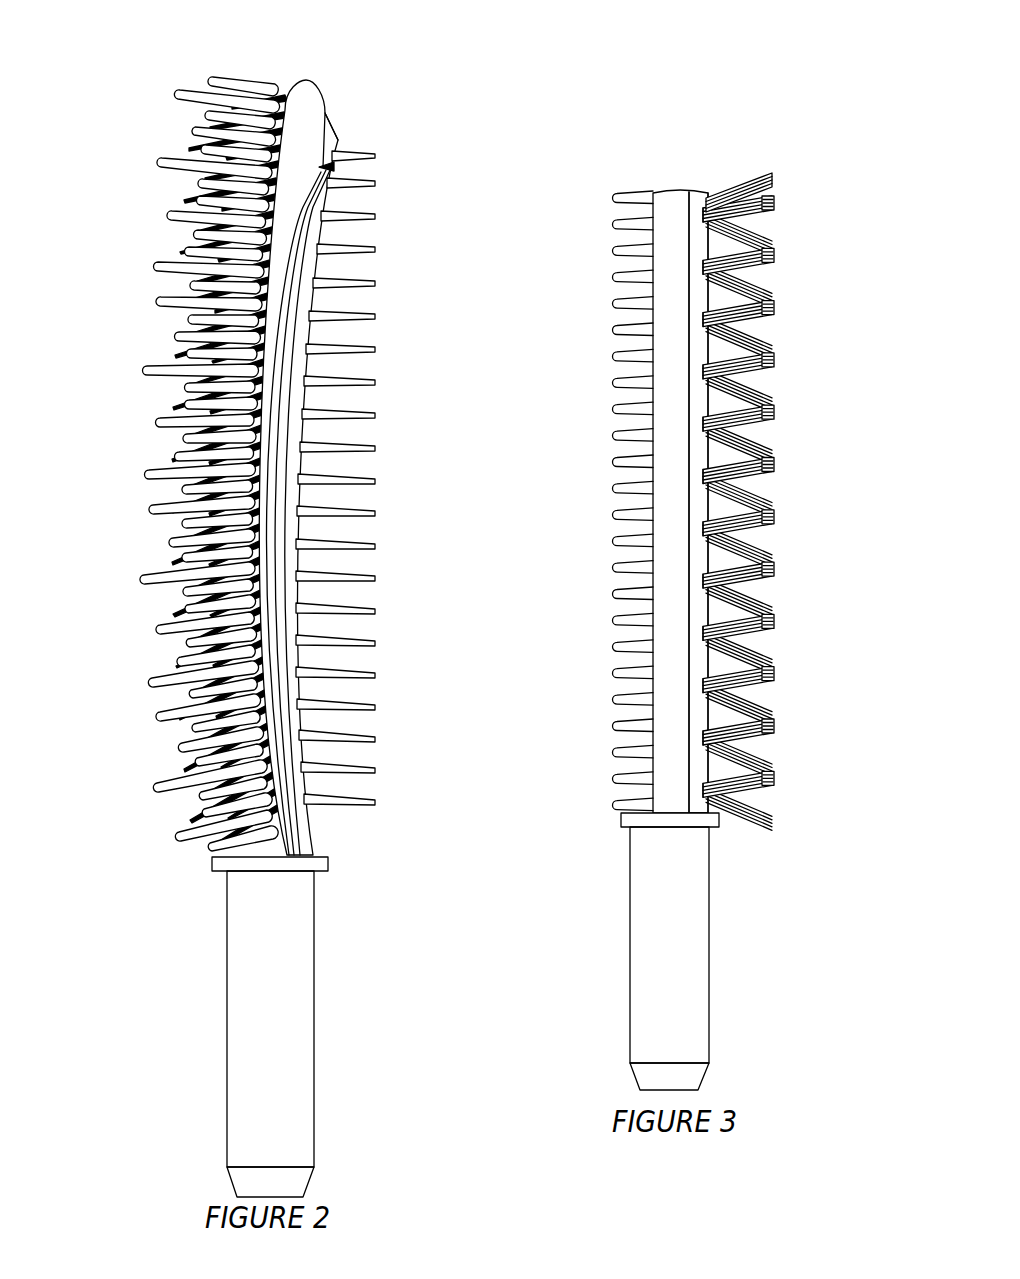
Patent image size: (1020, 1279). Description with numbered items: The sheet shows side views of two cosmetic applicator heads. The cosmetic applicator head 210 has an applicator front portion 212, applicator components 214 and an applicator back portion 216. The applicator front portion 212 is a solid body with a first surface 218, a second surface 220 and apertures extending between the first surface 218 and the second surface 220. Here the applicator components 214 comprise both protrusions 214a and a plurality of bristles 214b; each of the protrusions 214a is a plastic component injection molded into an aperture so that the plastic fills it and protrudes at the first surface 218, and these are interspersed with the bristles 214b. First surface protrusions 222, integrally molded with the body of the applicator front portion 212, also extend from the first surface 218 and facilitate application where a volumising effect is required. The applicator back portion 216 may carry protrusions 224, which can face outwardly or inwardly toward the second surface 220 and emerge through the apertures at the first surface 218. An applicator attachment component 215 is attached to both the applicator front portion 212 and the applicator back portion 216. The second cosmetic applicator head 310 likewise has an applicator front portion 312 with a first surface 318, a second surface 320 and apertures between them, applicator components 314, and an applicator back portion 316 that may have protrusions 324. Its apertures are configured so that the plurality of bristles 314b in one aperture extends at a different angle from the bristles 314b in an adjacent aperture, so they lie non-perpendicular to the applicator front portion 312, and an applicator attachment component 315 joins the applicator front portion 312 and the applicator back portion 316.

In FIG. 2, the cosmetic applicator head 210 is at (403, 84).
In FIG. 2, the applicator front portion 212 is at (294, 66).
In FIG. 2, the applicator component 214 is at (176, 149).
In FIG. 2, the protrusions 214a is at (190, 286).
In FIG. 2, the plurality of bristles 214b is at (233, 111).
In FIG. 2, the applicator attachment component 215 is at (316, 985).
In FIG. 2, the applicator back portion 216 is at (354, 127).
In FIG. 2, the first surface 218 is at (276, 188).
In FIG. 2, the second surface 220 is at (344, 166).
In FIG. 2, the first surface protrusions 222 is at (190, 447).
In FIG. 2, the protrusions 224 is at (378, 283).
In FIG. 3, the cosmetic applicator head 310 is at (771, 140).
In FIG. 3, the applicator front portion 312 is at (693, 176).
In FIG. 3, the applicator component 314 is at (788, 313).
In FIG. 3, the plurality of bristles 314b is at (775, 362).
In FIG. 3, the applicator attachment component 315 is at (710, 956).
In FIG. 3, the applicator back portion 316 is at (663, 200).
In FIG. 3, the first surface 318 is at (748, 226).
In FIG. 3, the second surface 320 is at (675, 290).
In FIG. 3, the protrusions 324 is at (606, 333).